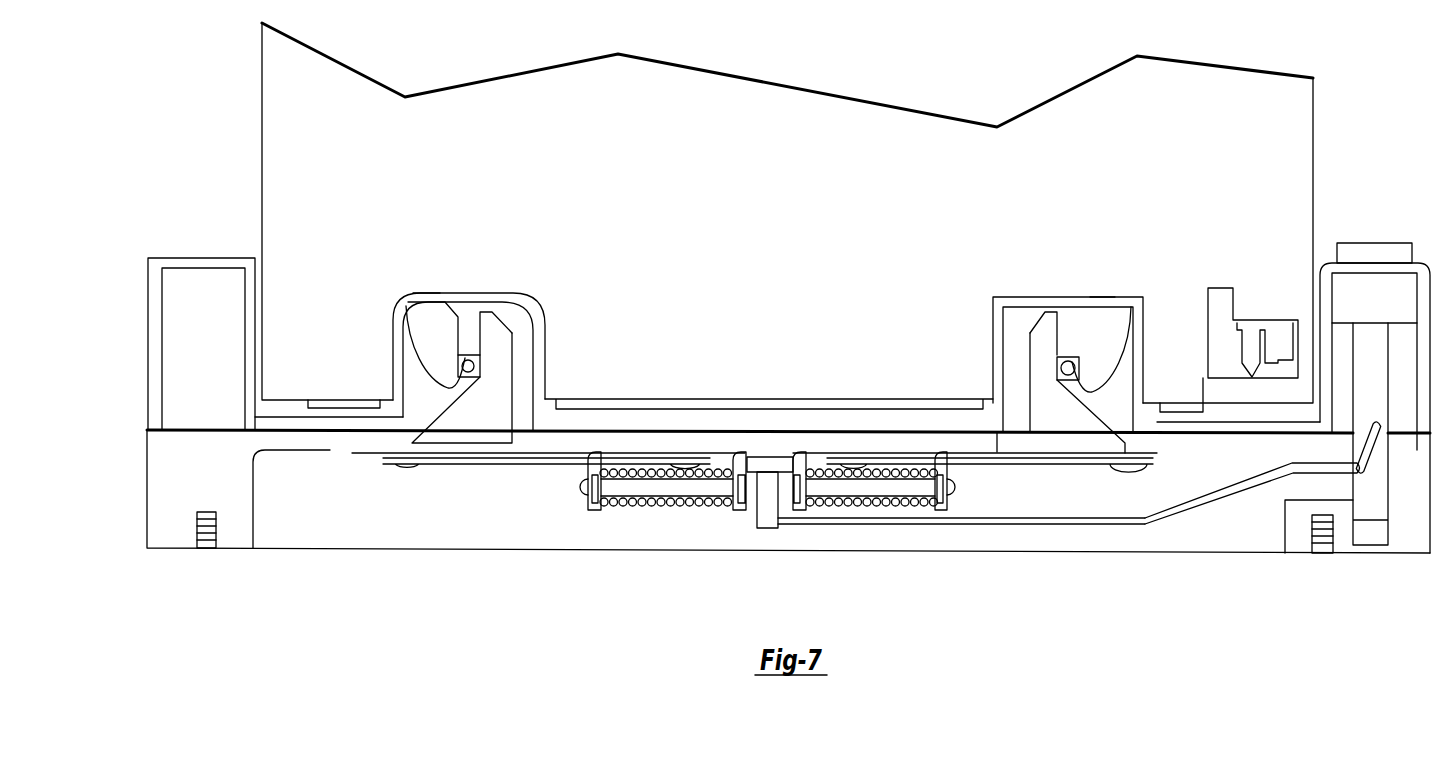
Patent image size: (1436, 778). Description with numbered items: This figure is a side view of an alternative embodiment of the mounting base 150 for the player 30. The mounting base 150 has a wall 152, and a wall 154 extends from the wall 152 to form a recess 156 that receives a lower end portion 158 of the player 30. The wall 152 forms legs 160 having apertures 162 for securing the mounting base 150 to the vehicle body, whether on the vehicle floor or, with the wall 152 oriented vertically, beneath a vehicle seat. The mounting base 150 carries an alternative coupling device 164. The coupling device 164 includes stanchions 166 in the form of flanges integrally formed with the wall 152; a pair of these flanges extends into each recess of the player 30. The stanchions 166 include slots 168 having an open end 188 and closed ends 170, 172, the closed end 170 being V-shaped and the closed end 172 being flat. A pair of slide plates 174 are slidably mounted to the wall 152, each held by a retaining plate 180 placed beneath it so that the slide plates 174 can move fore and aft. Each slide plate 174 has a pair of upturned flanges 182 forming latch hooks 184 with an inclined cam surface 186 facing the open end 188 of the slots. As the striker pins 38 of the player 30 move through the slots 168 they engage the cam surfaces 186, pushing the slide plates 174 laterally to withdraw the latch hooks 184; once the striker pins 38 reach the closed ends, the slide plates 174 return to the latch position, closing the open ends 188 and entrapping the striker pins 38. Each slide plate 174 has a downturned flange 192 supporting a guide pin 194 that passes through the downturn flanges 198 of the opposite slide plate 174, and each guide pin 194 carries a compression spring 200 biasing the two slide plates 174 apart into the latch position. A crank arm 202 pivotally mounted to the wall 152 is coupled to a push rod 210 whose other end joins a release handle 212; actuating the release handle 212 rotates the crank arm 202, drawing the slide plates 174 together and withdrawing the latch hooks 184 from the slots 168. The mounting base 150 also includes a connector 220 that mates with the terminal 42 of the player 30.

The player 30 is at (262, 112).
The recess 156 is at (270, 155).
The mounting base 150 is at (186, 237).
The wall 154 is at (262, 322).
The lower end portion 158 is at (273, 382).
The wall 152 is at (317, 440).
The legs 160 is at (253, 512).
The apertures 162 is at (197, 533).
The closed end 172 is at (395, 318).
The slots 168 is at (458, 300).
The open end 188 is at (424, 296).
The stanchions 166 is at (440, 300).
The inclined cam surface 186 is at (462, 323).
The latch hooks 184 is at (505, 322).
The striker pins 38 is at (508, 358).
The closed end 170 is at (1073, 368).
The coupling device 164 is at (1125, 280).
The upturned flanges 182 is at (503, 395).
The slide plates 174 is at (380, 452).
The retaining plate 180 is at (468, 458).
The downturn flanges 198 is at (595, 507).
The downturned flange 192 is at (737, 512).
The guide pin 194 is at (633, 502).
The compression spring 200 is at (680, 506).
The crank arm 202 is at (768, 458).
The push rod 210 is at (1030, 525).
The connector 220 is at (1223, 380).
The terminal 42 is at (1275, 320).
The release handle 212 is at (1372, 243).